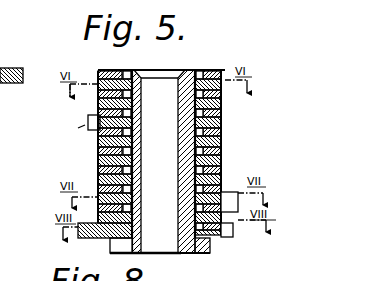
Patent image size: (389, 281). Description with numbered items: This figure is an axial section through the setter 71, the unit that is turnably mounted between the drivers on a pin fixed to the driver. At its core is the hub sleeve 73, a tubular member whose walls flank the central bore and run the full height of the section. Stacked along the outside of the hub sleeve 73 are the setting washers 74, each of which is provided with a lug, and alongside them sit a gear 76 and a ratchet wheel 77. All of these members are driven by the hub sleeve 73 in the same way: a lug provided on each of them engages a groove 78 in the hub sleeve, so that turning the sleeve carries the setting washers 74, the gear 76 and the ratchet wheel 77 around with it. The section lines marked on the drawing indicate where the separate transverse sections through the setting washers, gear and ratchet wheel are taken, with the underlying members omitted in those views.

The setter 71 is at (54, 72).
The hub sleeve 73 is at (181, 243).
The setting washers 74 is at (225, 82).
The gear 76 is at (224, 201).
The ratchet wheel 77 is at (232, 237).
The groove 78 is at (108, 237).